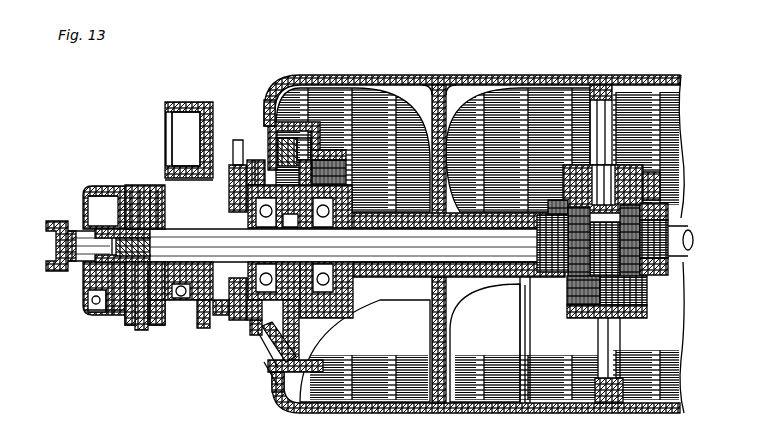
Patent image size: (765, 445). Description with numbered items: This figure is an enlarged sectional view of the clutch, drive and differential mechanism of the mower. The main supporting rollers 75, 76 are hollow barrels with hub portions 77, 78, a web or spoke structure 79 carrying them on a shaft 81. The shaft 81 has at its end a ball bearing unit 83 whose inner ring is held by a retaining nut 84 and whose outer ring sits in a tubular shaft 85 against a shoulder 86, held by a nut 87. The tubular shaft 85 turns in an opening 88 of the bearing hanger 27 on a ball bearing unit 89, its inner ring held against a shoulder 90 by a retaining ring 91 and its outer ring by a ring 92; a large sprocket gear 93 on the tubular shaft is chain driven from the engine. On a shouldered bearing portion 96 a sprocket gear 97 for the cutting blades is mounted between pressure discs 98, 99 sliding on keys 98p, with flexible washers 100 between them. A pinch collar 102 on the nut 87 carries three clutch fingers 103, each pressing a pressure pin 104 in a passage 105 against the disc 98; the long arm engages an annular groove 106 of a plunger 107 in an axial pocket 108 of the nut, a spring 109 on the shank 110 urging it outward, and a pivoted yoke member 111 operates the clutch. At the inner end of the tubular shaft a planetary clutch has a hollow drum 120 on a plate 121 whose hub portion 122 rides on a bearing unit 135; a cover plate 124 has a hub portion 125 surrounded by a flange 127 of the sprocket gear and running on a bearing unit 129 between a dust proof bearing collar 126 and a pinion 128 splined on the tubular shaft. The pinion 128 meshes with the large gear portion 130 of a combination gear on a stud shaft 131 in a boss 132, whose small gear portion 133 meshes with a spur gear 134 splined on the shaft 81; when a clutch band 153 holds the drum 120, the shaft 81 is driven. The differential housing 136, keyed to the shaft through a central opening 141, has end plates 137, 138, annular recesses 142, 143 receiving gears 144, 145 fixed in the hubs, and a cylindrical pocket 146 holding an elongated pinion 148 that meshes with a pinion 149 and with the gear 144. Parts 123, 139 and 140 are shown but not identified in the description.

The bearing hanger 27 is at (211, 138).
The main supporting roller 75 is at (458, 77).
The main supporting roller 76 is at (650, 74).
The hub portion 77 is at (470, 213).
The hub portion 78 is at (688, 282).
The web or spoke structure 79 is at (433, 87).
The shaft 81 is at (702, 216).
The anti-friction bearing unit 83 is at (186, 302).
The retaining nut 84 is at (158, 326).
The tubular shaft 85 is at (232, 322).
The shoulder 86 is at (203, 330).
The nut 87 is at (128, 327).
The opening 88 is at (186, 166).
The ball bearing unit 89 is at (178, 300).
The shoulder 90 is at (148, 186).
The retaining ring 91 is at (224, 310).
The ring 92 is at (166, 172).
The large sprocket gear 93 is at (236, 172).
The shouldered bearing portion 96 is at (128, 190).
The sprocket gear 97 is at (128, 186).
The pressure disc 98 is at (140, 192).
The keys 98p is at (143, 330).
The pressure disc 99 is at (135, 186).
The flexible washers 100 is at (130, 190).
The pinch collar 102 is at (90, 299).
The clutch finger 103 is at (96, 314).
The pressure pin 104 is at (104, 316).
The passage 105 is at (113, 318).
The annular groove 106 is at (92, 206).
The plunger 107 is at (94, 233).
The axial cylindrical pocket 108 is at (100, 190).
The spring 109 is at (116, 258).
The shank 110 is at (60, 248).
The pivoted yoke member 111 is at (50, 233).
The hollow drum 120 is at (280, 124).
The plate 121 is at (300, 318).
The hub portion 122 is at (348, 178).
The bearing cap 123 is at (352, 196).
The cover plate 124 is at (280, 366).
The hub portion 125 is at (252, 160).
The dust proof bearing collar 126 is at (262, 332).
The integral flange 127 is at (249, 166).
The pinion 128 is at (266, 360).
The anti-friction bearing unit 129 is at (272, 346).
The large diameter gear portion 130 is at (288, 152).
The stud shaft 131 is at (302, 158).
The boss 132 is at (330, 160).
The small diameter gear portion 133 is at (300, 140).
The spur gear 134 is at (300, 338).
The anti-friction bearing unit 135 is at (348, 308).
The differential housing 136 is at (582, 166).
The flanged end plate 137 is at (556, 200).
The flanged end plate 138 is at (650, 172).
The shifter rod 139 is at (531, 286).
The collar 140 is at (658, 278).
The central opening 141 is at (620, 170).
The annular recess 142 is at (566, 210).
The annular recess 143 is at (652, 202).
The gear 144 is at (548, 240).
The gear 145 is at (692, 240).
The cylindrical pocket 146 is at (598, 320).
The elongated pinion 148 is at (590, 318).
The elongated pinion 149 is at (612, 324).
The clutch band 153 is at (272, 94).